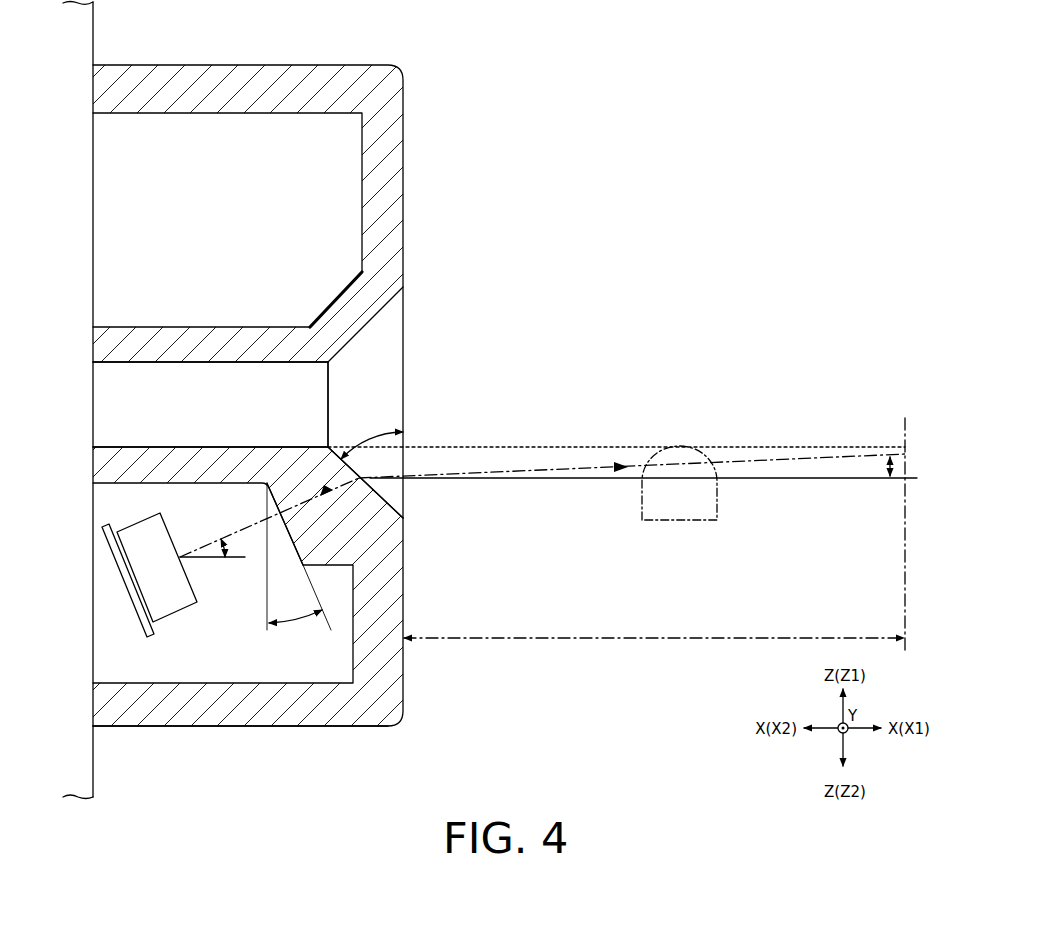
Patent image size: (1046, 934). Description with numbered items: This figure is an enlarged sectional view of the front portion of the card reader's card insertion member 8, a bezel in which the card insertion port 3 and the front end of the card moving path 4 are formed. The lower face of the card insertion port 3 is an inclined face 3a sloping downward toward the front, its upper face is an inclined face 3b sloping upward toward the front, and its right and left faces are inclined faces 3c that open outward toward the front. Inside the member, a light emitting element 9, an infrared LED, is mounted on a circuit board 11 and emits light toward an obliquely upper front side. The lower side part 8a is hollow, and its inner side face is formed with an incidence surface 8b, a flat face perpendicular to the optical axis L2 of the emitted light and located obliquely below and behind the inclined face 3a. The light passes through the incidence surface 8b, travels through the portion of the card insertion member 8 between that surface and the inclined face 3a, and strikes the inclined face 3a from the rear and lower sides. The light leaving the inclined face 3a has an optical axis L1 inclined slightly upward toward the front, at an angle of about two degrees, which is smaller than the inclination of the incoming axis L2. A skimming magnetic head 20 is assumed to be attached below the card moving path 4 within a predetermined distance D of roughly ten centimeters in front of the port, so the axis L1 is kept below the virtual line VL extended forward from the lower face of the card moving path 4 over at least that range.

The card insertion member 8 is at (245, 64).
The lower side part 8a is at (233, 727).
The incidence surface 8b is at (293, 548).
The card insertion port 3 is at (402, 395).
The inclined face 3a is at (375, 493).
The inclined face 3b is at (365, 320).
The inclined faces 3c is at (377, 391).
The card moving path 4 is at (215, 417).
The light emitting element 9 is at (175, 618).
The circuit board 11 is at (125, 579).
The skimming magnetic head 20 is at (673, 522).
The optical axis L1 is at (563, 468).
The optical axis L2 is at (300, 491).
The virtual line VL is at (790, 447).
The predetermined distance D is at (654, 625).